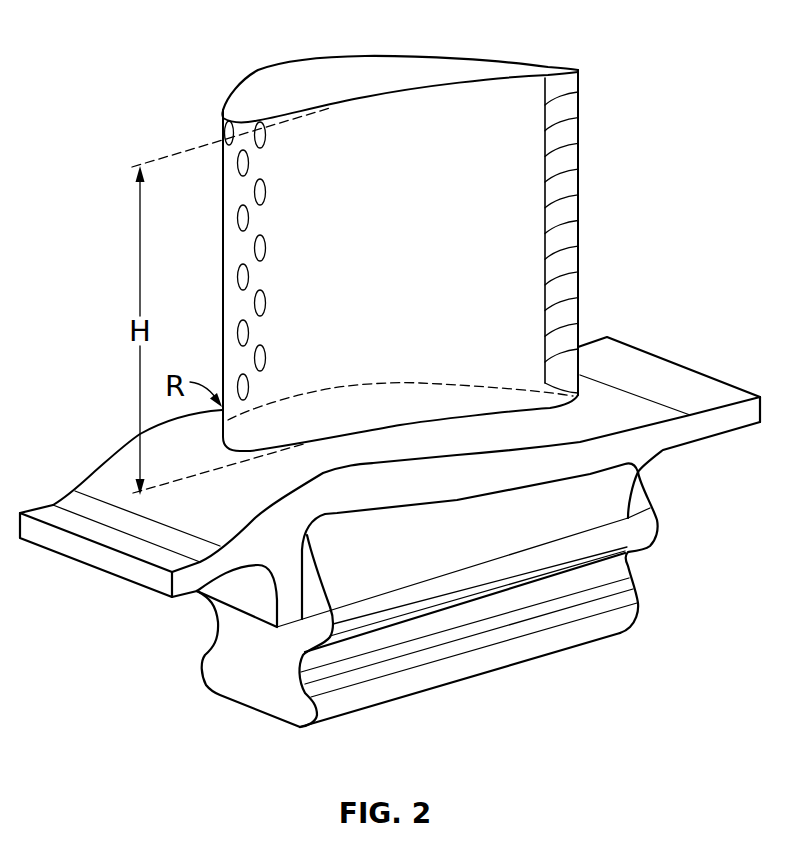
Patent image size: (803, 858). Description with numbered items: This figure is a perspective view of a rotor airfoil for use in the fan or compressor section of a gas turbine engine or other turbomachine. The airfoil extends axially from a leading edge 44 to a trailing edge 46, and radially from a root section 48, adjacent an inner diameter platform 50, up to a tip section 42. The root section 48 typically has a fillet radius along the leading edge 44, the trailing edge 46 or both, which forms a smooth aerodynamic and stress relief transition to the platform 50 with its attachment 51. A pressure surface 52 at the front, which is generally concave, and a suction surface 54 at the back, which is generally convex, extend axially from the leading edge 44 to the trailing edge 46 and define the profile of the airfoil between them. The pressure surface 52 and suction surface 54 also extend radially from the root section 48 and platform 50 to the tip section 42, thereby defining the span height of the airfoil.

The tip section 42 is at (400, 227).
The leading edge 44 is at (223, 272).
The trailing edge 46 is at (578, 110).
The root section 48 is at (420, 382).
The inner diameter platform 50 is at (95, 487).
The attachment 51 is at (405, 636).
The pressure surface 52 is at (487, 268).
The suction surface 54 is at (285, 68).